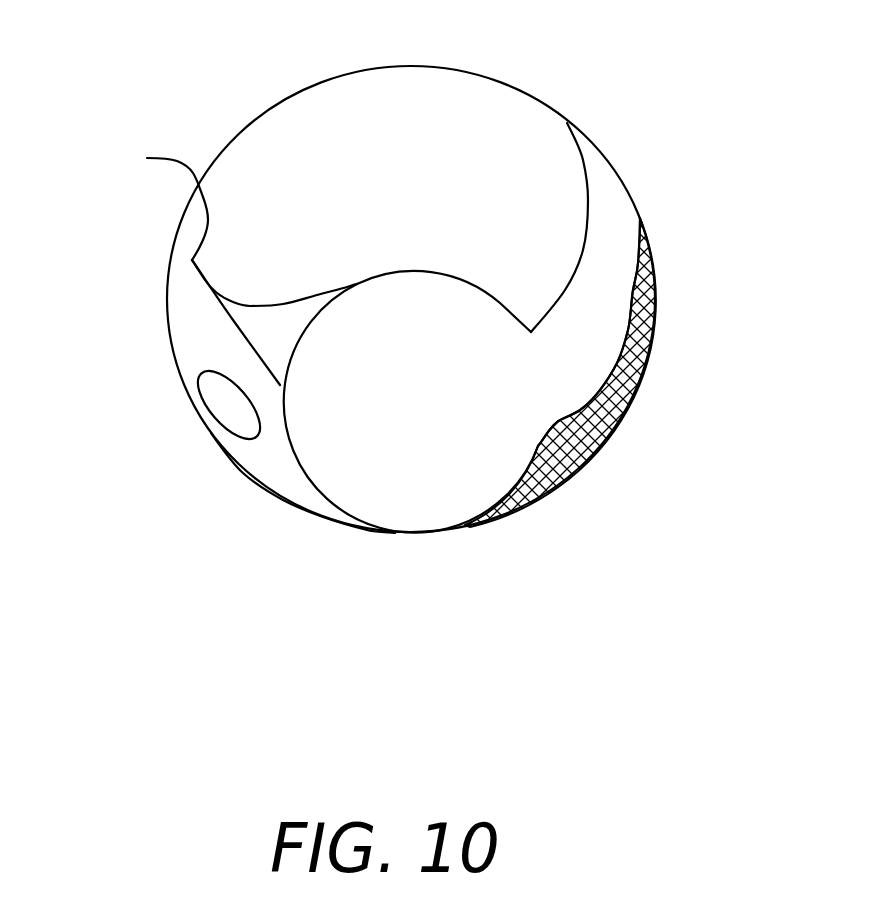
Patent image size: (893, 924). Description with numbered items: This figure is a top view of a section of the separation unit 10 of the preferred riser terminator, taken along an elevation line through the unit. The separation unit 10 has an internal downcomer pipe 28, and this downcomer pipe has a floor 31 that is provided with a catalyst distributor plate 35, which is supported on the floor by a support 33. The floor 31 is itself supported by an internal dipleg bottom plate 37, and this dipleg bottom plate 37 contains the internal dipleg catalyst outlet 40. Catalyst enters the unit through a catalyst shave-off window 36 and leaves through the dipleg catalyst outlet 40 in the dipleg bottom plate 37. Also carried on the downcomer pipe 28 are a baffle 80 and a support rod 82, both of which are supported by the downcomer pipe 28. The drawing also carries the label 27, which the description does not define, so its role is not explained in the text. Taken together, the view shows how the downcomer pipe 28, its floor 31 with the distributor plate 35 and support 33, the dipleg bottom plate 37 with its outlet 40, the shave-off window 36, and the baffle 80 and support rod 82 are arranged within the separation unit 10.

The separation unit 10 is at (640, 227).
The first panel 27 is at (377, 86).
The downcomer pipe 28 is at (420, 270).
The floor 31 is at (416, 419).
The support 33 is at (543, 400).
The catalyst distributor plate 35 is at (572, 363).
The catalyst shave-off window 36 is at (183, 257).
The internal dipleg bottom plate 37 is at (203, 343).
The dipleg catalyst outlet 40 is at (230, 406).
The baffle 80 is at (154, 201).
The support rod 82 is at (232, 315).